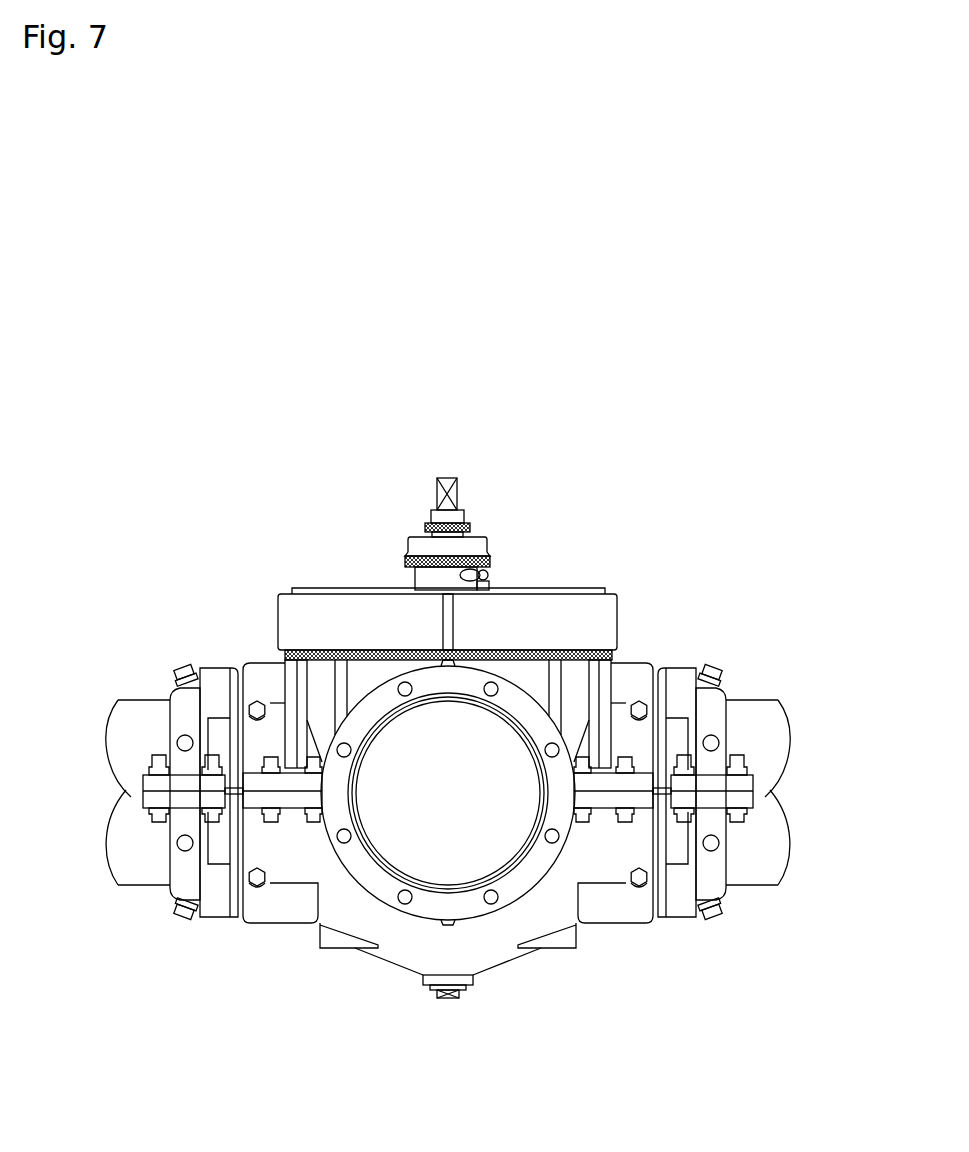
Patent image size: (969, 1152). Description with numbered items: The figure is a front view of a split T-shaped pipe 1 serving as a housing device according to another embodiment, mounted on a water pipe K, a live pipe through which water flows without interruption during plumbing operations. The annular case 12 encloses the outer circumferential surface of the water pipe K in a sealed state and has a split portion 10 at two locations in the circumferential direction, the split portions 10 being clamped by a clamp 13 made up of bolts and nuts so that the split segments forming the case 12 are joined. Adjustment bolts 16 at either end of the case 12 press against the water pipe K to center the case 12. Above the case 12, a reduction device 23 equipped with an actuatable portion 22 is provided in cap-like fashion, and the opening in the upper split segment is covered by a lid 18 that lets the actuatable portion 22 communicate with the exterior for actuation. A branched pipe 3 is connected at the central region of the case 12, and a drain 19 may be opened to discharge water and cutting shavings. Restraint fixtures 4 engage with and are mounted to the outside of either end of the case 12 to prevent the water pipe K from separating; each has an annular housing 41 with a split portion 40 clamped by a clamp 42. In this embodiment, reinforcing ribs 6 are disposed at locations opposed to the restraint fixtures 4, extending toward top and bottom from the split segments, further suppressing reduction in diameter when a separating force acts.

The split T-shaped pipe 1 is at (250, 581).
The branched pipe 3 is at (473, 918).
The restraint fixture 4 is at (164, 925).
The reinforcing rib 6 is at (263, 660).
The split portion 10 is at (323, 793).
The case 12 is at (372, 953).
The clamp 13 is at (622, 822).
The adjustment bolt 16 is at (253, 922).
The lid 18 is at (607, 594).
The drain 19 is at (446, 1000).
The actuatable portion 22 is at (437, 483).
The reduction device 23 is at (412, 545).
The split portion 40 is at (760, 778).
The annular housing 41 is at (720, 687).
The clamp 42 is at (732, 822).
The water pipe K is at (112, 690).